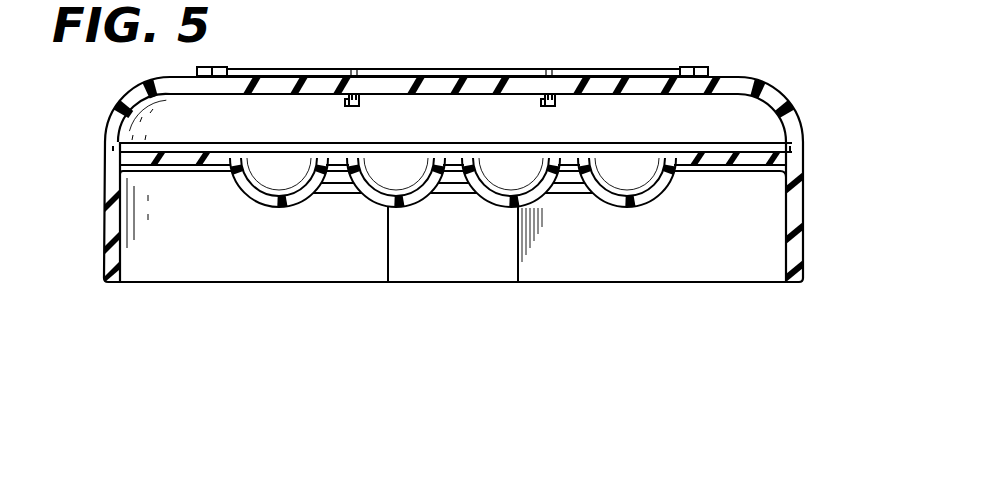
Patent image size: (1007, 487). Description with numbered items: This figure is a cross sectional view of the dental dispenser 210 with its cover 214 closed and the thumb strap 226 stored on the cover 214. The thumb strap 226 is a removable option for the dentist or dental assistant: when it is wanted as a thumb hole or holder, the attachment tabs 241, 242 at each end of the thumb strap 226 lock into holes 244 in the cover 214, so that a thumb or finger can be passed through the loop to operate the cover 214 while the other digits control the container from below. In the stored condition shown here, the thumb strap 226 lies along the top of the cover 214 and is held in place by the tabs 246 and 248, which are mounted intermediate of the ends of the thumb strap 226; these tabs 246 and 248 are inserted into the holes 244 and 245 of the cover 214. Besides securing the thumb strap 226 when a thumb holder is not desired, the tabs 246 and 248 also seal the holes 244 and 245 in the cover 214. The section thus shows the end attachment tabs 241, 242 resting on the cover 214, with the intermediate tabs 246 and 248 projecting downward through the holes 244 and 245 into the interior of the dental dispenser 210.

The dental dispenser 210 is at (113, 293).
The cover 214 is at (770, 92).
The thumb strap 226 is at (562, 69).
The attachment tab 241 is at (203, 67).
The attachment tab 242 is at (700, 67).
The hole 244 is at (360, 103).
The hole 245 is at (540, 103).
The tab 246 is at (346, 101).
The tab 248 is at (556, 102).